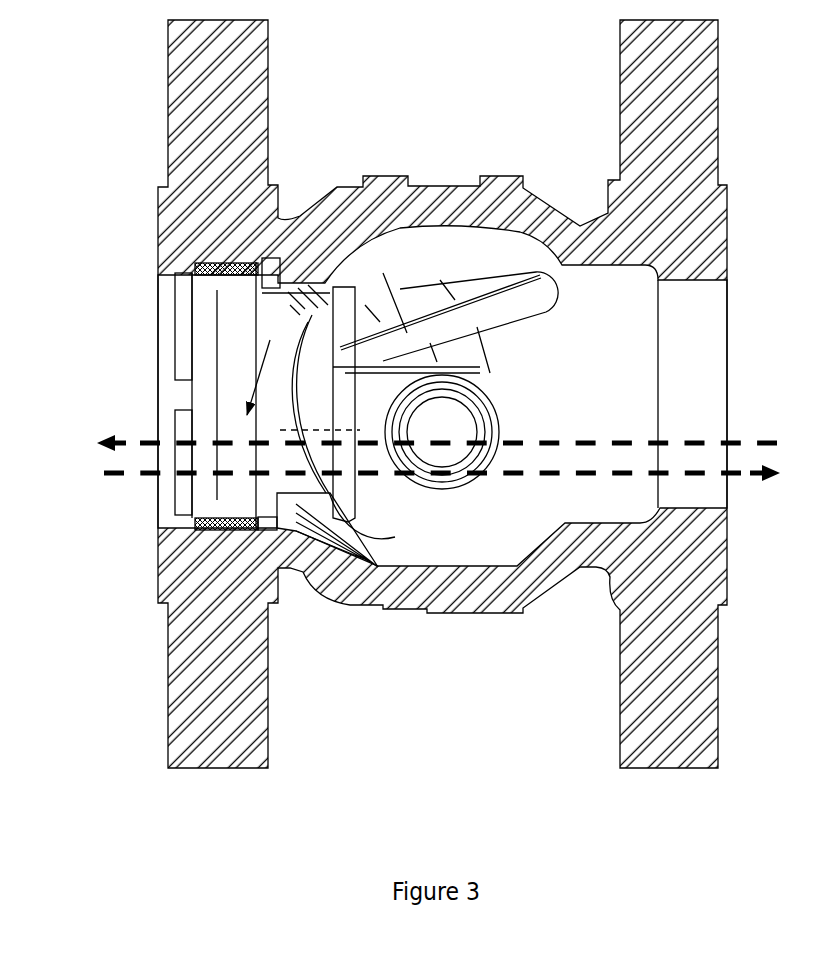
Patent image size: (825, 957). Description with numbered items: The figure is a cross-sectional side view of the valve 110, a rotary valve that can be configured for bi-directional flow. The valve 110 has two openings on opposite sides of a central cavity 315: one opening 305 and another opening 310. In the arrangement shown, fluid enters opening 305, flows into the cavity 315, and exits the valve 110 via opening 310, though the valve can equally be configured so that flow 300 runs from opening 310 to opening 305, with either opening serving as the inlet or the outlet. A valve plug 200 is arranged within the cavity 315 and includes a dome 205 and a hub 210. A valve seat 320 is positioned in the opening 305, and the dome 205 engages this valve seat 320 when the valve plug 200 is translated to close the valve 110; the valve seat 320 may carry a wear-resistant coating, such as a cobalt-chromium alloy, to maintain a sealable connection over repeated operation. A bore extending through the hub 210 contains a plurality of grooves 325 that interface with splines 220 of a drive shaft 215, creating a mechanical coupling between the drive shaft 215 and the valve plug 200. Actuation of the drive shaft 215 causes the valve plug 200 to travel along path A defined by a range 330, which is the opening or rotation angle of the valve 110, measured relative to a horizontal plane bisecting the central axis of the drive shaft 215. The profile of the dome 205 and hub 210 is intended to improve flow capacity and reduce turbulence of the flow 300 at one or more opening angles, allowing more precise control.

The valve 110 is at (168, 138).
The valve plug 200 is at (507, 348).
The dome 205 is at (483, 293).
The hub 210 is at (462, 492).
The drive shaft 215 is at (443, 450).
The splines 220 is at (490, 417).
The flow 300 is at (433, 461).
The opening 305 is at (148, 398).
The opening 310 is at (733, 382).
The cavity 315 is at (567, 310).
The valve seat 320 is at (268, 295).
The grooves 325 is at (480, 395).
The range 330 is at (366, 257).